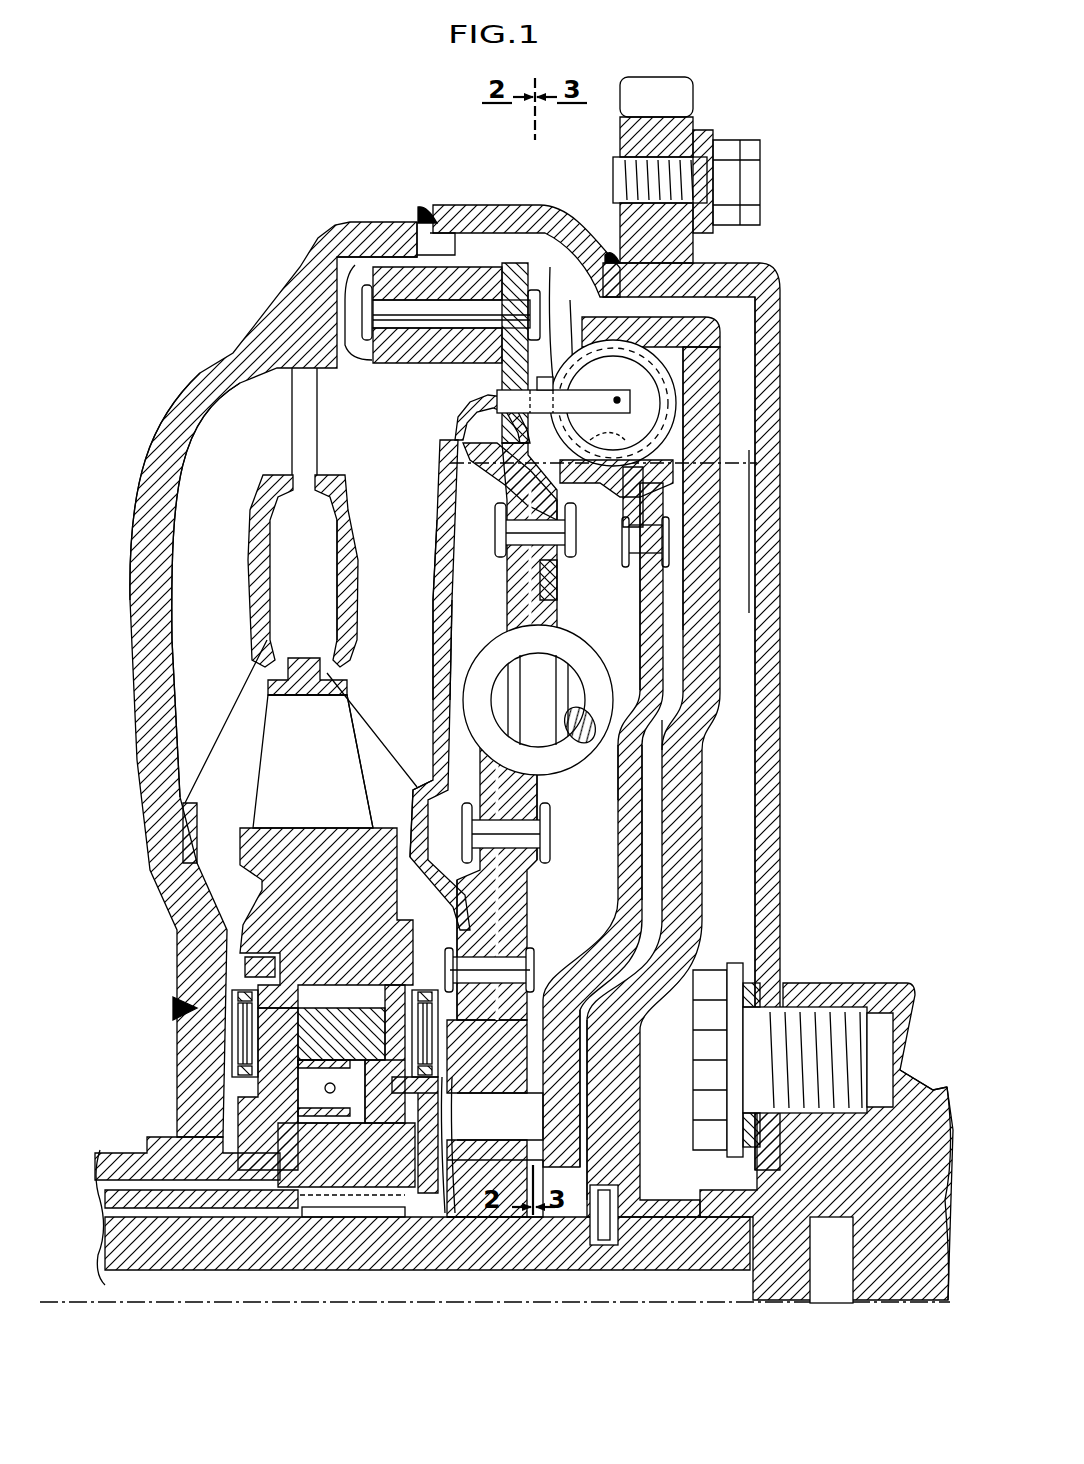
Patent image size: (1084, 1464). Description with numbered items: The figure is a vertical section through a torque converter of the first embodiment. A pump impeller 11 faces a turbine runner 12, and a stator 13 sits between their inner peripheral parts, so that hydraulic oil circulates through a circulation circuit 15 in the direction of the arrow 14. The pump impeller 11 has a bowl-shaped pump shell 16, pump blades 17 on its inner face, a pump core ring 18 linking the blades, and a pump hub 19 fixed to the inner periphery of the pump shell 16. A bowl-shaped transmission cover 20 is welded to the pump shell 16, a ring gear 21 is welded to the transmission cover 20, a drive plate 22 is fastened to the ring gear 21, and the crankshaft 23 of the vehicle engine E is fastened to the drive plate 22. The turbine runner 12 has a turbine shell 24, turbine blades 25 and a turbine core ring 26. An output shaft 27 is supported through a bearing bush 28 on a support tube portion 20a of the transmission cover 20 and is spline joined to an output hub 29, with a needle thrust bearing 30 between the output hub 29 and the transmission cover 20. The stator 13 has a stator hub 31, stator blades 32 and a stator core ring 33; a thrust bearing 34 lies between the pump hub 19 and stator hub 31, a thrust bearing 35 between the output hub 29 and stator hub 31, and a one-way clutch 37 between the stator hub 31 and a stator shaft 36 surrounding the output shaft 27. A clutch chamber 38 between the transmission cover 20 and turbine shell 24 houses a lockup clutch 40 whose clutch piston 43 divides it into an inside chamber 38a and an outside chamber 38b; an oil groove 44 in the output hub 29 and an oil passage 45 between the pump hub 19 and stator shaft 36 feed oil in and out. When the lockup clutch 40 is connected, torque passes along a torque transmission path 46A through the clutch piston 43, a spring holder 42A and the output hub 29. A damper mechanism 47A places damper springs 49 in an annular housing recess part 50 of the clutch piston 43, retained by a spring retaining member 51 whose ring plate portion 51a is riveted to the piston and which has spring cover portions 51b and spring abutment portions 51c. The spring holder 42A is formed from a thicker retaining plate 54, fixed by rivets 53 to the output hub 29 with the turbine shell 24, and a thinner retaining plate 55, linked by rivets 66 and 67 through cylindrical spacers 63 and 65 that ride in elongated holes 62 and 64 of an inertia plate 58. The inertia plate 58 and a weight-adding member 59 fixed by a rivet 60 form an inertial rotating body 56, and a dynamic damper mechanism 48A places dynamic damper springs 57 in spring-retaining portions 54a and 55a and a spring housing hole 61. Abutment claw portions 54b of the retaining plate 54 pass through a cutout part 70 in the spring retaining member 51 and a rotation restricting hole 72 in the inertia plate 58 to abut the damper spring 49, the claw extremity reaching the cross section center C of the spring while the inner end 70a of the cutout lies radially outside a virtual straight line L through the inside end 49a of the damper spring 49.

The pump impeller 11 is at (230, 353).
The turbine runner 12 is at (348, 365).
The stator 13 is at (260, 750).
The arrow 14 is at (283, 447).
The circulation circuit 15 is at (198, 586).
The pump shell 16 is at (170, 405).
The pump blades 17 is at (190, 485).
The pump core ring 18 is at (265, 567).
The pump hub 19 is at (193, 1082).
The transmission cover 20 is at (683, 833).
The support tube portion 20a is at (805, 1285).
The ring gear 21 is at (668, 135).
The drive plate 22 is at (770, 878).
The crankshaft 23 is at (912, 1095).
The turbine shell 24 is at (405, 420).
The turbine blades 25 is at (370, 680).
The turbine core ring 26 is at (345, 590).
The output shaft 27 is at (345, 1258).
The bearing bush 28 is at (700, 1280).
The output hub 29 is at (473, 1217).
The needle thrust bearing 30 is at (605, 1195).
The stator hub 31 is at (248, 935).
The stator blades 32 is at (270, 800).
The stator core ring 33 is at (305, 675).
The thrust bearing 34 is at (243, 1040).
The thrust bearing 35 is at (418, 990).
The stator shaft 36 is at (167, 1200).
The one-way clutch 37 is at (293, 1063).
The clutch chamber 38 is at (562, 808).
The inside chamber 38a is at (458, 1180).
The outside chamber 38b is at (710, 897).
The lockup clutch 40 is at (665, 662).
The spring holder 42A is at (440, 493).
The clutch piston 43 is at (632, 792).
The oil groove 44 is at (585, 1180).
The oil passage 45 is at (213, 1195).
The torque transmission path 46A is at (645, 850).
The damper mechanism 47A is at (577, 350).
The dynamic damper mechanism 48A is at (463, 262).
The damper spring 49 is at (640, 345).
The inside end 49a is at (577, 478).
The housing recess part 50 is at (705, 348).
The spring retaining member 51 is at (648, 570).
The ring plate portion 51a is at (640, 577).
The spring cover portion 51b is at (500, 262).
The spring abutment portion 51c is at (700, 268).
The rivets 53 is at (515, 965).
The retaining plate 54 is at (445, 785).
The spring-retaining portion 54a is at (440, 578).
The abutment claw portion 54b is at (655, 418).
The retaining plate 55 is at (545, 868).
The spring-retaining portion 55a is at (620, 745).
The inertial rotating body 56 is at (468, 255).
The dynamic damper spring 57 is at (470, 685).
The inertia plate 58 is at (497, 522).
The weight-adding member 59 is at (417, 270).
The rivet 60 is at (383, 293).
The spring housing hole 61 is at (455, 578).
The elongated holes 62 is at (415, 810).
The cylindrical spacers 63 is at (505, 845).
The elongated holes 64 is at (557, 565).
The cylindrical spacers 65 is at (505, 540).
The rivets 66 is at (545, 815).
The rivets 67 is at (626, 540).
The cutout part 70 is at (537, 383).
The inner end 70a is at (485, 477).
The rotation restricting hole 72 is at (500, 413).
The cross section center C is at (630, 393).
The virtual straight line L is at (607, 428).
The vehicle engine E is at (910, 1310).